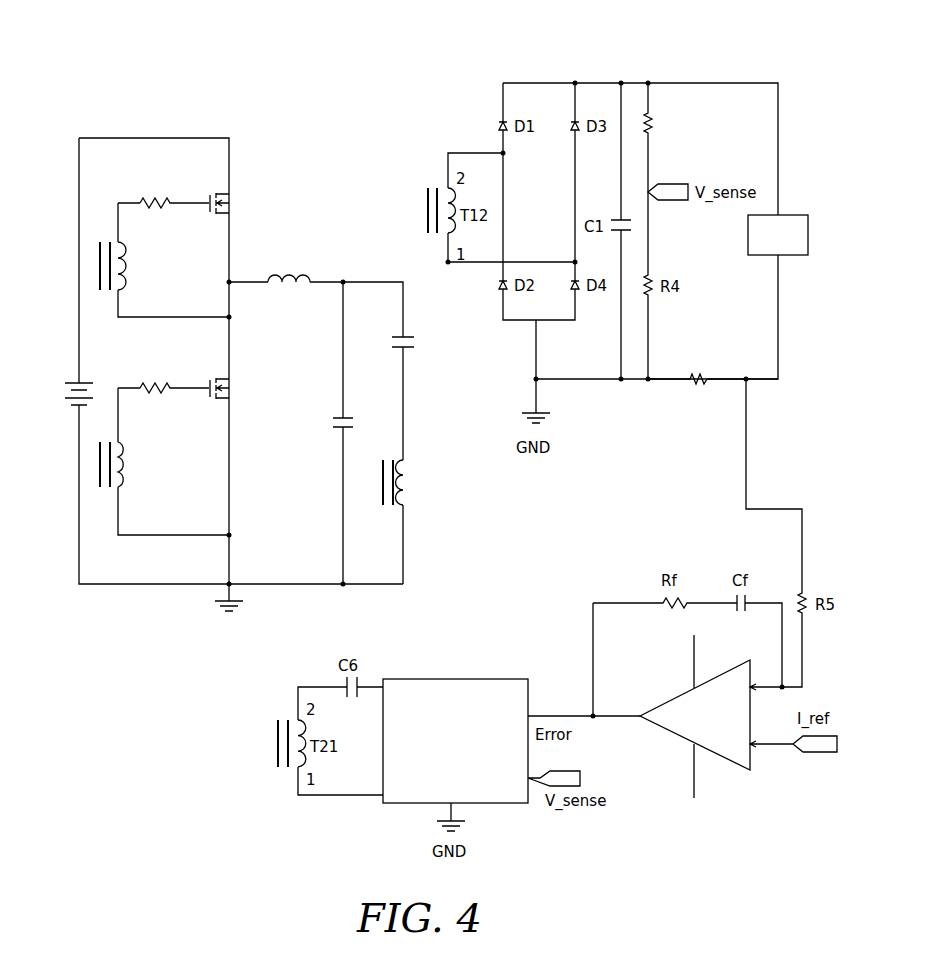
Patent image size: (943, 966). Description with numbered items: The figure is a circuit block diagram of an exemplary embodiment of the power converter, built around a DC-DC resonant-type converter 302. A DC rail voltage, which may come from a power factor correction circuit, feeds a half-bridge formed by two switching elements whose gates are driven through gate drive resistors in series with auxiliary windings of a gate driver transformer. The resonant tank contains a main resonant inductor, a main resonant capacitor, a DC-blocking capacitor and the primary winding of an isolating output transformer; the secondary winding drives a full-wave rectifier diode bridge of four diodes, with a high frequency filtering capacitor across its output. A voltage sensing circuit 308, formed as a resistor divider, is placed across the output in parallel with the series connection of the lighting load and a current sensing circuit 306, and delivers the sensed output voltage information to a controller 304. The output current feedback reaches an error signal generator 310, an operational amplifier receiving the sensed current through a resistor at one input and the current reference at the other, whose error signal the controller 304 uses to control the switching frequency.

The DC-DC resonant-type converter 302 is at (90, 82).
The controller 304 is at (478, 679).
The current sensing circuit 306 is at (702, 376).
The voltage sensing circuit 308 is at (652, 112).
The error signal generator 310 is at (750, 772).